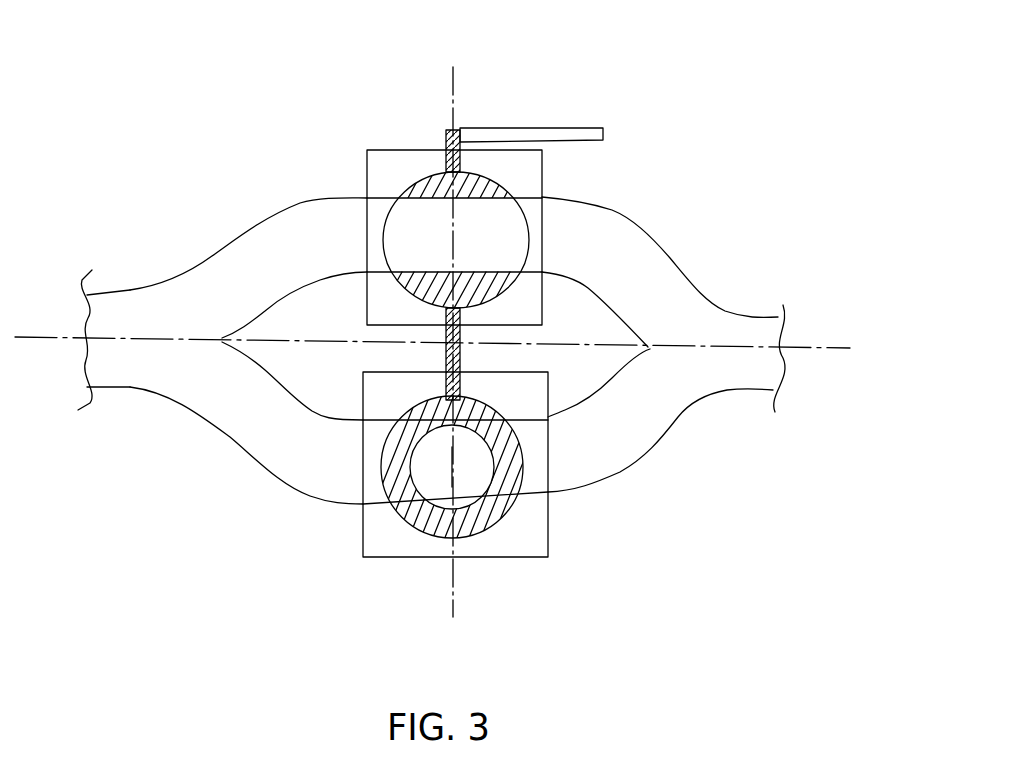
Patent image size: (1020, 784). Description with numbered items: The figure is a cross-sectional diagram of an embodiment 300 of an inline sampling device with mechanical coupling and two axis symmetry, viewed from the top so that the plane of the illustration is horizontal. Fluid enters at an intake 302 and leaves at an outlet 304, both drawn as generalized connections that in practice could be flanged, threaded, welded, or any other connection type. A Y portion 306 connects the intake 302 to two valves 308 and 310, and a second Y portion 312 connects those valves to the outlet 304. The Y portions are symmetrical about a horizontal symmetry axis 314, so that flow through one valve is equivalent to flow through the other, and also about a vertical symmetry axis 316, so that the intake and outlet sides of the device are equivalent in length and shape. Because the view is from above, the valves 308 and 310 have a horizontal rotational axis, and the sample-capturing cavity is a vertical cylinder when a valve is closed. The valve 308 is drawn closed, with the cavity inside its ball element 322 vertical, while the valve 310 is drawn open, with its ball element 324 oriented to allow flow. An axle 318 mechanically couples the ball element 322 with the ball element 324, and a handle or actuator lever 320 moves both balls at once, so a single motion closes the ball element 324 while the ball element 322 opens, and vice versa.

The embodiment 300 is at (680, 600).
The intake 302 is at (67, 377).
The outlet 304 is at (803, 367).
The Y portion 306 is at (230, 232).
The valve 308 is at (402, 557).
The valve 310 is at (385, 150).
The second Y portion 312 is at (617, 218).
The symmetry axis 314 is at (677, 345).
The symmetry axis 316 is at (456, 600).
The axle 318 is at (447, 383).
The actuator lever 320 is at (517, 127).
The ball element 322 is at (431, 538).
The ball element 324 is at (430, 174).